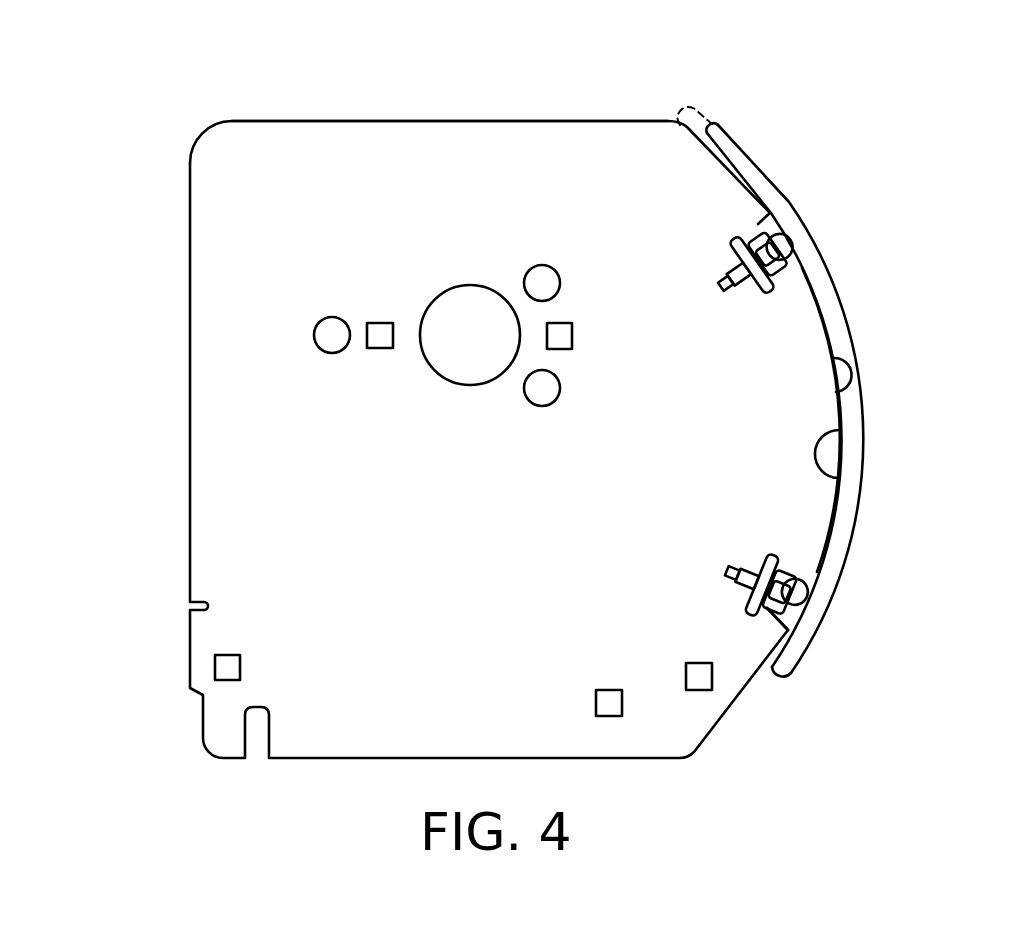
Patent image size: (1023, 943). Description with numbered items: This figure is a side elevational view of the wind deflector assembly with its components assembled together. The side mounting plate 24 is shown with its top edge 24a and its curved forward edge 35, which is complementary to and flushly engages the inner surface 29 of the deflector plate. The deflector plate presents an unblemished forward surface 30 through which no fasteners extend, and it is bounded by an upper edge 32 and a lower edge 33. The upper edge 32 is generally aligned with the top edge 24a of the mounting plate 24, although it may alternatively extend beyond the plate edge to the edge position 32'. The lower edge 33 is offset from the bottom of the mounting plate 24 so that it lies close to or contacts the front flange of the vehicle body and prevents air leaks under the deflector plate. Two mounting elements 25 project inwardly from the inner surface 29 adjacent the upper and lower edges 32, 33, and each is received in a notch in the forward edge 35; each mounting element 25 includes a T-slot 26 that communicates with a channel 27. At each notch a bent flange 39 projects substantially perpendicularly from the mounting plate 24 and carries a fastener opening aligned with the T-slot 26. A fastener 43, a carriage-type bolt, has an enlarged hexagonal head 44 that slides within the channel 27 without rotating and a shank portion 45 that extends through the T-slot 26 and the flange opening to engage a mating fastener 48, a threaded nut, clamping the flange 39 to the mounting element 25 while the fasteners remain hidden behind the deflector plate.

The side mounting plate 24 is at (305, 153).
The top edge of mounting plate 24a is at (467, 121).
The mounting element 25 is at (820, 548).
The T-slot 26 is at (757, 617).
The channel 27 is at (812, 255).
The inner surface 29 is at (840, 430).
The forward surface 30 is at (848, 317).
The upper edge 32 is at (750, 100).
The edge position 32' is at (703, 71).
The lower edge 33 is at (783, 679).
The forward edge 35 is at (835, 358).
The bent flange 39 is at (745, 251).
The fastener 43 is at (802, 604).
The enlarged head 44 is at (788, 206).
The shank portion 45 is at (733, 577).
The mating fastener 48 is at (720, 272).